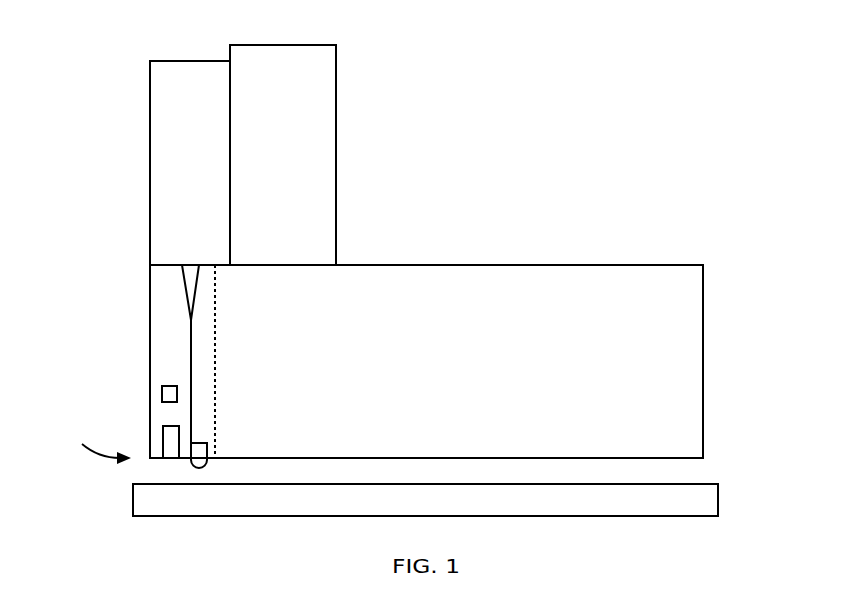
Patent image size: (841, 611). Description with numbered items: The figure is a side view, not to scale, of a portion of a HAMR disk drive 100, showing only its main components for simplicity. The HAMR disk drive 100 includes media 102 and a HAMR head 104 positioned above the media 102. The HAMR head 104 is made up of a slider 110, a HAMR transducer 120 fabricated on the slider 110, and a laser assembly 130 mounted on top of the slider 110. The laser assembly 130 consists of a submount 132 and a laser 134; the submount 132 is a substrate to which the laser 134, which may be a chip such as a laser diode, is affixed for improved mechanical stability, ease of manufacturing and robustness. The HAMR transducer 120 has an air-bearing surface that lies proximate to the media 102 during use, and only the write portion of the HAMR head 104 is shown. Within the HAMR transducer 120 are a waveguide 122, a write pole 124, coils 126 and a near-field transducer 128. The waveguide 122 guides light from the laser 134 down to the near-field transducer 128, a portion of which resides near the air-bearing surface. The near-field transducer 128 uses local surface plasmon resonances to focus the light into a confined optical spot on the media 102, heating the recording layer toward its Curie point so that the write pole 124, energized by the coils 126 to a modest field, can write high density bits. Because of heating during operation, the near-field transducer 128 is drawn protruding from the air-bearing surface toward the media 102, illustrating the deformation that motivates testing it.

The HAMR disk drive 100 is at (445, 23).
The media 102 is at (133, 497).
The HAMR head 104 is at (715, 205).
The slider 110 is at (703, 330).
The HAMR transducer 120 is at (215, 288).
The waveguide 122 is at (190, 345).
The write pole 124 is at (163, 440).
The coil(s) 126 is at (162, 392).
The near-field transducer (NFT) 128 is at (203, 465).
The laser assembly 130 is at (60, 172).
The submount 132 is at (337, 138).
The laser 134 is at (149, 86).